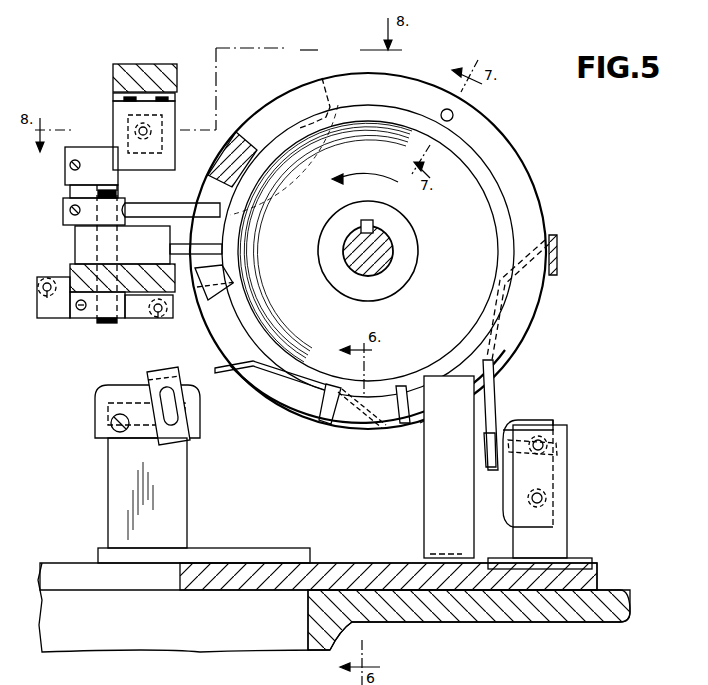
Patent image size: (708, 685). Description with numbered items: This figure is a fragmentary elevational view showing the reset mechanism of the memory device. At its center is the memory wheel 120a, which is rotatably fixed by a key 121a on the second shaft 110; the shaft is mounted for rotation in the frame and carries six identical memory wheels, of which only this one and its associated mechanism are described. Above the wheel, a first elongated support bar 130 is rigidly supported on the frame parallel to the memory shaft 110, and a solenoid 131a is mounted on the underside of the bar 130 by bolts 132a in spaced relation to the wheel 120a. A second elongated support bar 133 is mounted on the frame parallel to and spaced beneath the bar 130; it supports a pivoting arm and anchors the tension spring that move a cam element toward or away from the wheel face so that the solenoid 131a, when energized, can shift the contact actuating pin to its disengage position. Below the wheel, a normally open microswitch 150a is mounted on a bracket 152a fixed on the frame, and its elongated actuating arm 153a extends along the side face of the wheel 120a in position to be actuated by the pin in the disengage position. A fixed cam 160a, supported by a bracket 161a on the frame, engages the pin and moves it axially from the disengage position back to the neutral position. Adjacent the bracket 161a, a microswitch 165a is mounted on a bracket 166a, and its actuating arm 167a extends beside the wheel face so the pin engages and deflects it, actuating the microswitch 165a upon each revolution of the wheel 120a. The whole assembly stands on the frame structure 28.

The frame structure 28 is at (546, 612).
The second shaft 110 is at (388, 262).
The memory wheel 120a is at (520, 192).
The key 121a is at (358, 224).
The first elongated support bar 130 is at (165, 64).
The solenoid 131a is at (175, 122).
The bolts 132a is at (115, 100).
The second elongated support bar 133 is at (70, 274).
The microswitch 150a is at (97, 412).
The bracket 152a is at (114, 496).
The actuating arm 153a is at (255, 376).
The fixed cam 160a is at (396, 424).
The bracket 161a is at (430, 493).
The microswitch 165a is at (540, 422).
The bracket 166a is at (566, 500).
The actuating arm 167a is at (496, 410).